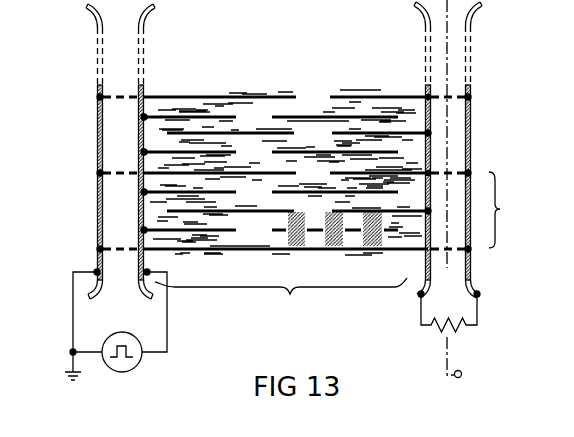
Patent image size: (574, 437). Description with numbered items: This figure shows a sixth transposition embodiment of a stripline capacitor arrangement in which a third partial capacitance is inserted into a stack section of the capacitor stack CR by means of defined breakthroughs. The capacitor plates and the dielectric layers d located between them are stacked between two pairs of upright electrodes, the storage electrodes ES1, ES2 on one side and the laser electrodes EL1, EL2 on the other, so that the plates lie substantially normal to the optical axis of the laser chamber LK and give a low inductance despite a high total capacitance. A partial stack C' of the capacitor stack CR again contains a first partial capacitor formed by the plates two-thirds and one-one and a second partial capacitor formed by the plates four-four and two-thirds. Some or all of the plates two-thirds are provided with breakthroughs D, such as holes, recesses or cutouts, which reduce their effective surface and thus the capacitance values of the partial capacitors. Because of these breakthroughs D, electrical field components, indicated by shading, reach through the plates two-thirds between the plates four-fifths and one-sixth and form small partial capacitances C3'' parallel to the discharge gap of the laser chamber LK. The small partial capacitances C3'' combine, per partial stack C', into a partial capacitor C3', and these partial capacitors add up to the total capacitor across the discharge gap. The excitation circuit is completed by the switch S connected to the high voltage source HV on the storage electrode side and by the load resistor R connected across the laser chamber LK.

The storage electrode ES1 is at (98, 26).
The storage electrode ES2 is at (146, 26).
The laser electrode EL1 is at (426, 24).
The laser electrode EL2 is at (474, 26).
The capacitor stack CR is at (540, 94).
The dielectric layer d is at (400, 138).
The partial stack C' is at (506, 210).
The laser chamber LK is at (449, 313).
The resistor R is at (436, 328).
The switch S is at (116, 324).
The high voltage source HV is at (141, 363).
The breakthroughs D is at (180, 232).
The small partial capacitance C3'' is at (335, 248).
The partial capacitor C3' is at (281, 301).